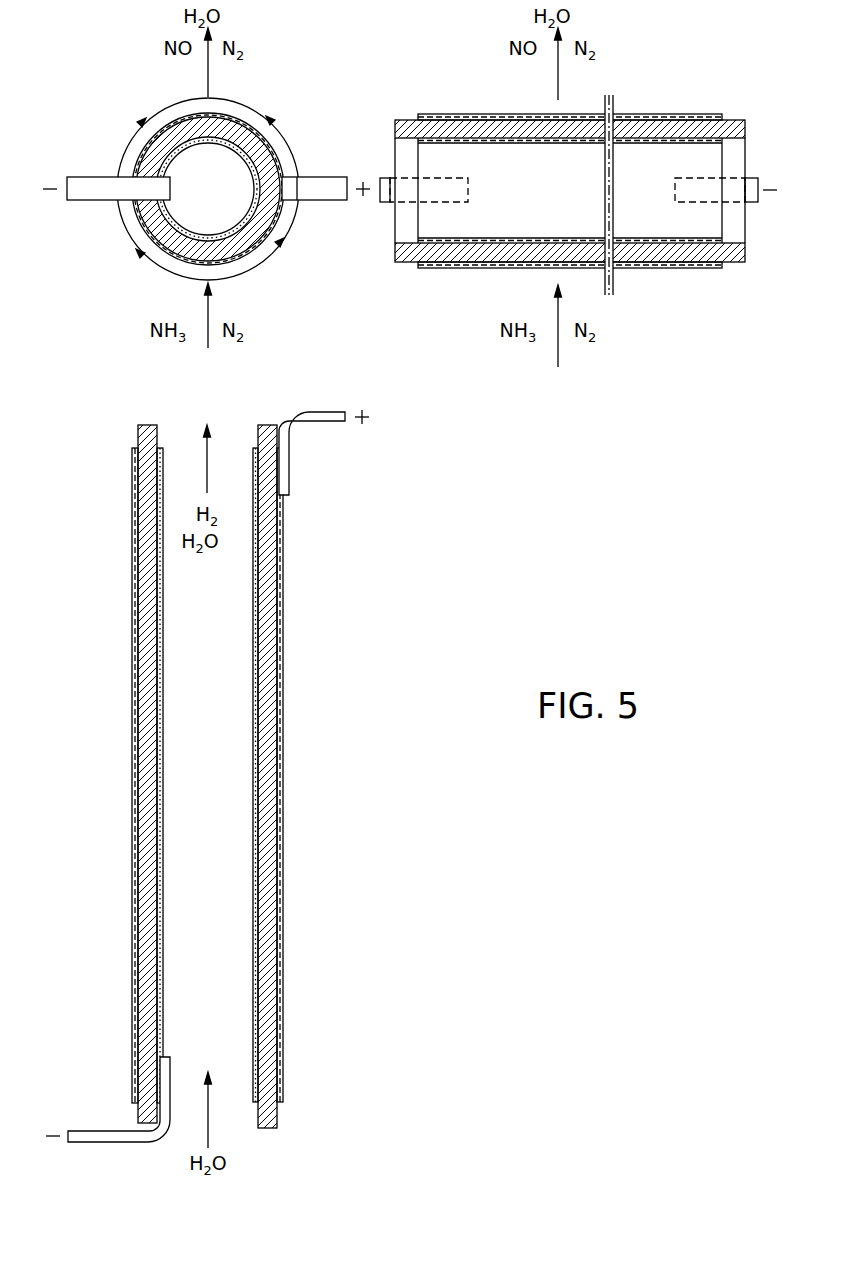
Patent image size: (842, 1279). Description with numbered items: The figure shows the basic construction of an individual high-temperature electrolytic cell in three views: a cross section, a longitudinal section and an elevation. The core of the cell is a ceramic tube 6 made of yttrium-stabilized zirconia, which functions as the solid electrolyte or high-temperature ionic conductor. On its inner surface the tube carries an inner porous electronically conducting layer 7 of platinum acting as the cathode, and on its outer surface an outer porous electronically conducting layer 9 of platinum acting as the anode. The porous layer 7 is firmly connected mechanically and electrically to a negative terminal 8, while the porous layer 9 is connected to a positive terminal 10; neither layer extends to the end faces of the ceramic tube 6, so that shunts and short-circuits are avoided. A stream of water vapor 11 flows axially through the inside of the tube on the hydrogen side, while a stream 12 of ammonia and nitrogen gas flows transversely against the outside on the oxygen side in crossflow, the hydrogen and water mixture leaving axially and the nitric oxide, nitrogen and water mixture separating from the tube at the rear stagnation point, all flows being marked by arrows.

The ceramic tube 6 is at (163, 153).
The inner porous electronically conducting layer 7 is at (230, 233).
The negative terminal 8 is at (92, 192).
The outer porous electronically conducting layer 9 is at (177, 117).
The positive terminal 10 is at (318, 190).
The stream of H2O vapor 11 is at (210, 1110).
The stream of NH3/N2 gas 12 is at (210, 338).